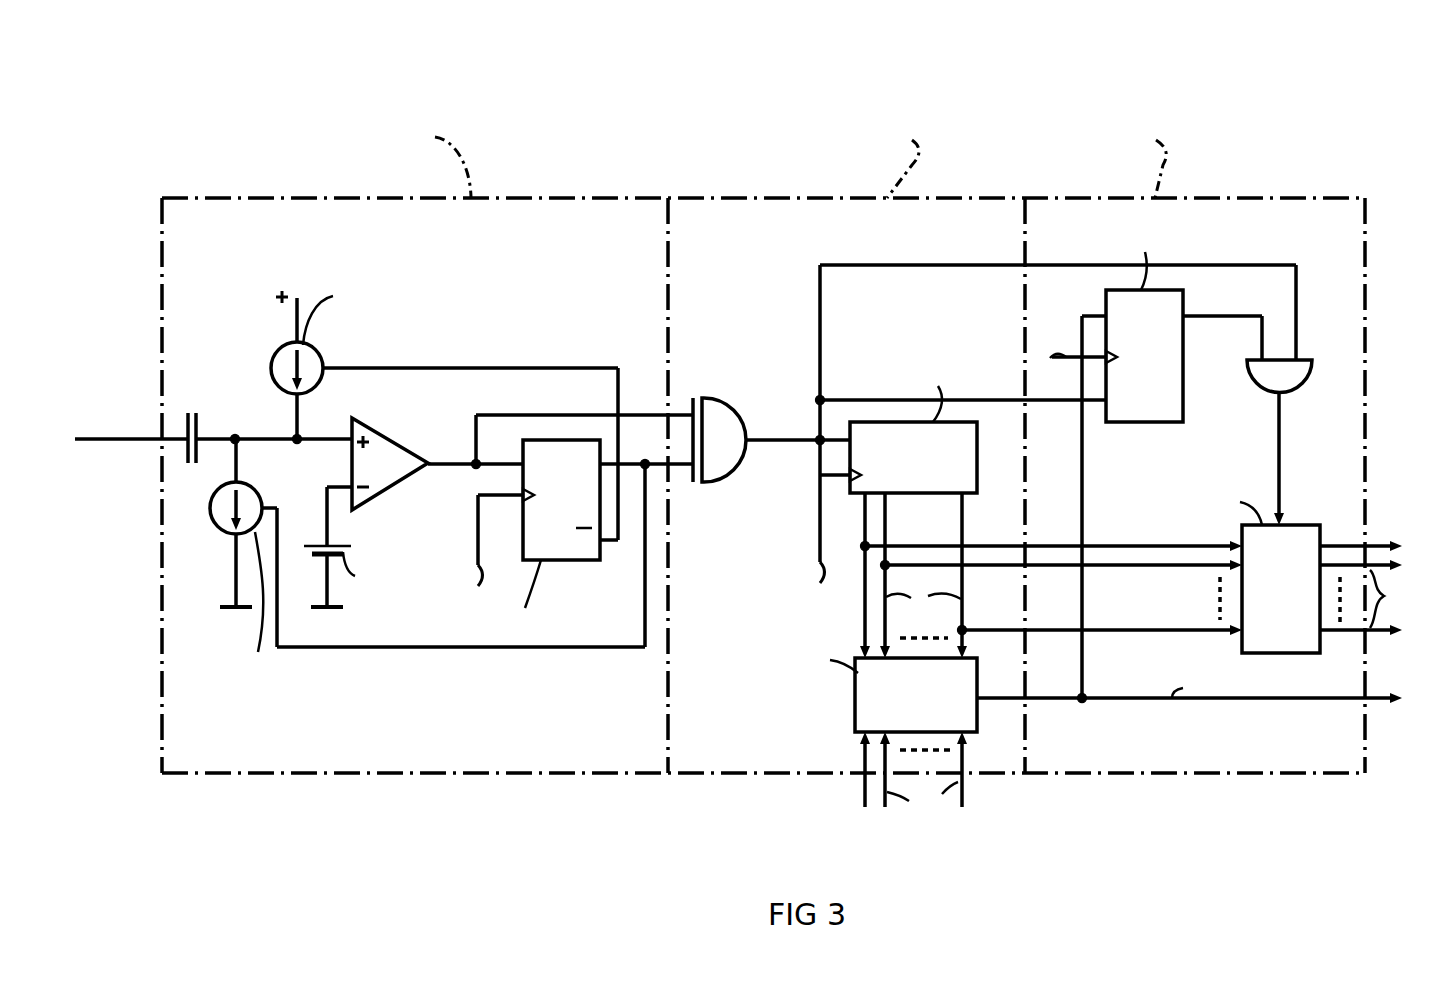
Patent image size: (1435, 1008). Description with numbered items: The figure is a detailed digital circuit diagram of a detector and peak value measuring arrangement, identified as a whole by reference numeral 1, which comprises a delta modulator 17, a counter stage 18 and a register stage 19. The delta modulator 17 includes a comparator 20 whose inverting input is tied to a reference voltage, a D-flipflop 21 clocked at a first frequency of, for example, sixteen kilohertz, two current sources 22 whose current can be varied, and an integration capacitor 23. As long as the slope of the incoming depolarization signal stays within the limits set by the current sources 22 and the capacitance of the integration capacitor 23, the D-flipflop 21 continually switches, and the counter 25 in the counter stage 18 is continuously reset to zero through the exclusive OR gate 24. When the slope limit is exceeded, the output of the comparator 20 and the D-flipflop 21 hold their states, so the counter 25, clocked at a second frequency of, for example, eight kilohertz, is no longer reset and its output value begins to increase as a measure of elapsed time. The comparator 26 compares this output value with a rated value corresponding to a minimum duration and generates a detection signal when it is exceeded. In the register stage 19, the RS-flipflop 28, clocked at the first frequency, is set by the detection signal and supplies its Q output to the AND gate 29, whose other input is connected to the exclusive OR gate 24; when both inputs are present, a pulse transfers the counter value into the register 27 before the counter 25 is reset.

The signal processing circuit 1 is at (769, 165).
The delta modulator 17 is at (541, 217).
The counter stage 18 is at (933, 218).
The register stage 19 is at (1240, 218).
The comparator 20 is at (395, 440).
The D-flipflop 21 is at (565, 560).
The current sources 22 is at (326, 342).
The integration capacitor 23 is at (199, 436).
The exclusive OR gate 24 is at (716, 398).
The counter 25 is at (977, 453).
The comparator 26 is at (855, 692).
The register 27 is at (1297, 521).
The RS-flipflop 28 is at (1183, 400).
The AND gate 29 is at (1300, 385).